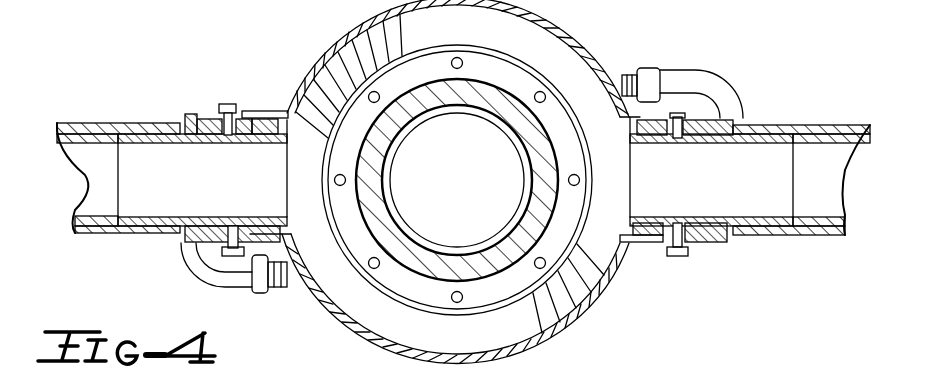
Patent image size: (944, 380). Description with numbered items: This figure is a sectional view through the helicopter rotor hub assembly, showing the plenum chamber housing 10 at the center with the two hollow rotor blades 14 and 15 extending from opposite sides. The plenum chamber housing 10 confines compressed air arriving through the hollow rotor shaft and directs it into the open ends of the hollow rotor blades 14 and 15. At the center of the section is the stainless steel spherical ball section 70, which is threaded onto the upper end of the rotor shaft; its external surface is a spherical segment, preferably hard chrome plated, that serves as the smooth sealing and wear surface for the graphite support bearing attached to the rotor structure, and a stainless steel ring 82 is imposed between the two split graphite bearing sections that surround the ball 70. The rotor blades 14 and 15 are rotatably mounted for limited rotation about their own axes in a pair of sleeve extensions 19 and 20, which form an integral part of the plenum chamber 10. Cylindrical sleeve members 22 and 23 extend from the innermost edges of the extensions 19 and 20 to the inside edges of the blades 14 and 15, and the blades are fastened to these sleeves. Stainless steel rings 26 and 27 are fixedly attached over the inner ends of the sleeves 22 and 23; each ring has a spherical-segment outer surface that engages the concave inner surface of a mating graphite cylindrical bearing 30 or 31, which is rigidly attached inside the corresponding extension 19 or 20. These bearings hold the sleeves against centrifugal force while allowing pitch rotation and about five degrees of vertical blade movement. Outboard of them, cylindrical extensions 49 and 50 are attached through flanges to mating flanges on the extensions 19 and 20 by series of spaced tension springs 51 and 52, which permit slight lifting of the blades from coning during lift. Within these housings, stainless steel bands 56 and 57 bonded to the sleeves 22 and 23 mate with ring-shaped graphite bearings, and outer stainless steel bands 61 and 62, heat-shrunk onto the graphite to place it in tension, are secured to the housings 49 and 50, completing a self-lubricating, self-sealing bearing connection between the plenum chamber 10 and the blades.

The plenum chamber housing 10 is at (343, 47).
The rotor blade 14 is at (110, 123).
The rotor blade 15 is at (822, 125).
The sleeve extension 19 is at (268, 112).
The sleeve extension 20 is at (648, 243).
The cylindrical sleeve member 22 is at (160, 217).
The cylindrical sleeve member 23 is at (655, 217).
The stainless steel ring 26 is at (258, 135).
The stainless steel ring 27 is at (658, 137).
The graphite cylindrical bearing 30 is at (250, 119).
The graphite cylindrical bearing 31 is at (677, 138).
The cylindrical extension 49 is at (198, 115).
The cylindrical extension 50 is at (720, 243).
The tension spring 51 is at (233, 104).
The tension spring 52 is at (680, 256).
The stainless steel band 56 is at (212, 135).
The stainless steel band 57 is at (702, 136).
The stainless steel band 61 is at (195, 143).
The stainless steel band 62 is at (728, 118).
The spherical ball section 70 is at (388, 152).
The stainless steel ring 82 is at (432, 58).